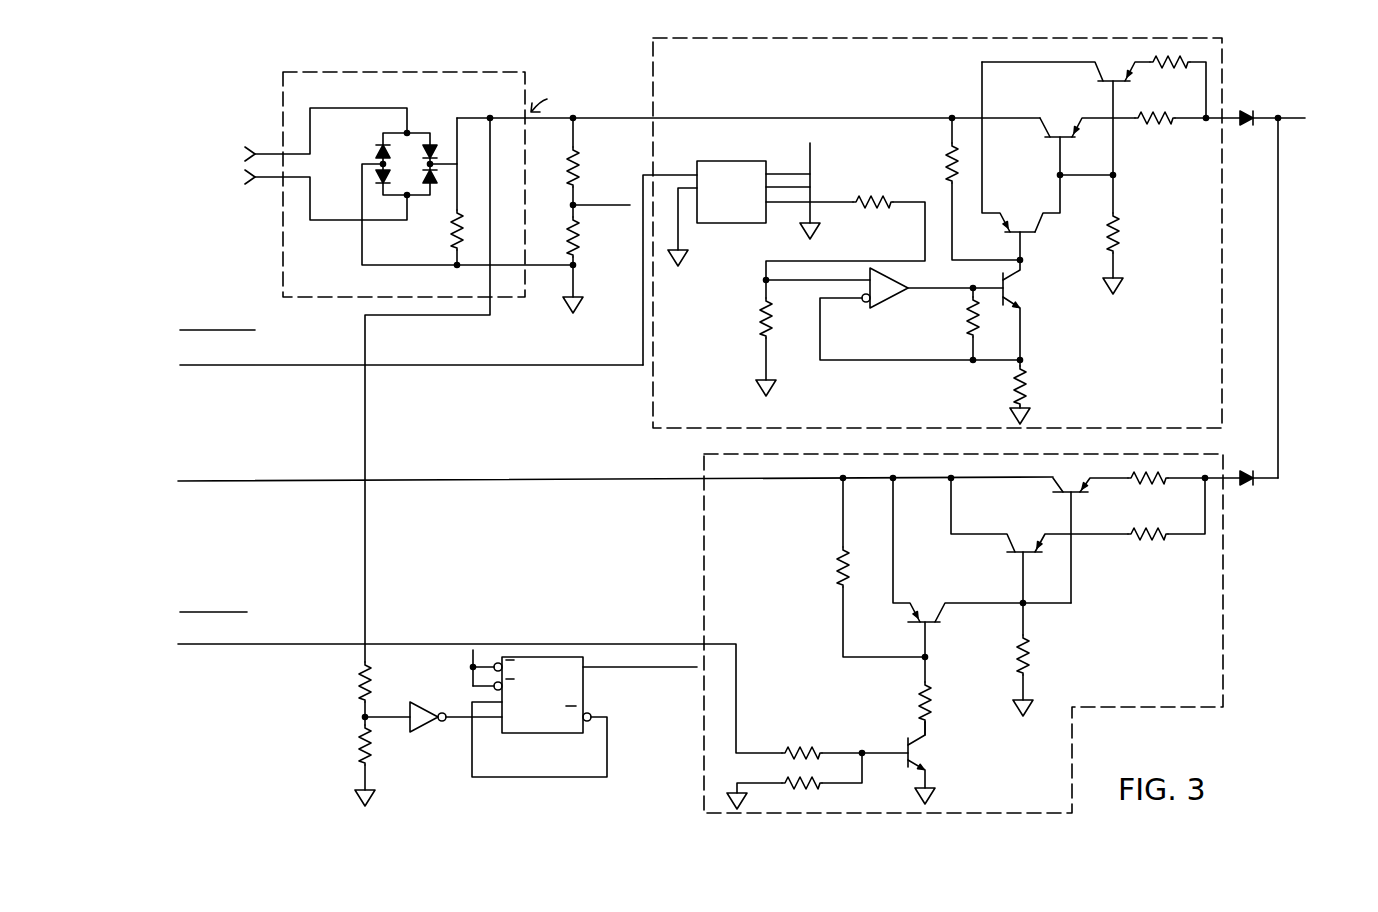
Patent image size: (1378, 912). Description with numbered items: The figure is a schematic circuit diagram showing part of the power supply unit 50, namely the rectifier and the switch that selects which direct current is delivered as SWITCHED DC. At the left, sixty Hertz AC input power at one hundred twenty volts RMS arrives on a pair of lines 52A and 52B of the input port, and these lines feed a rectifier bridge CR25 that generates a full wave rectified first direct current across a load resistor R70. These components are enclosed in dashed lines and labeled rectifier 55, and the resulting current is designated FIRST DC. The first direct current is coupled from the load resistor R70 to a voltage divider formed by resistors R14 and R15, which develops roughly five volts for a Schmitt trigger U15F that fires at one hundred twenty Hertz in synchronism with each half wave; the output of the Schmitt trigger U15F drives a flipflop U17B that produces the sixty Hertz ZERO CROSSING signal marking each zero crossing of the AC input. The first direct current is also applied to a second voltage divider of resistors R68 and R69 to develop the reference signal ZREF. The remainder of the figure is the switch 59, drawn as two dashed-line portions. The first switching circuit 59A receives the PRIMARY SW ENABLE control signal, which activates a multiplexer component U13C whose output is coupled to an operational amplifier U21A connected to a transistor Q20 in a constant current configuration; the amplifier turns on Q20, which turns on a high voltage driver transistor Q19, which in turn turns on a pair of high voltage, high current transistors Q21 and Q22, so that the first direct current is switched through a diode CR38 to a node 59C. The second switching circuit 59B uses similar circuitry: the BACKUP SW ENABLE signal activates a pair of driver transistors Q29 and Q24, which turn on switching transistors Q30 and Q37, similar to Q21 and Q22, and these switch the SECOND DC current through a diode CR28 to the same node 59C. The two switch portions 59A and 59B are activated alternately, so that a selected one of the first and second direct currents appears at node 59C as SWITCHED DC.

The unit 50 is at (1249, 82).
The rectifier 55 is at (372, 72).
The line 52A is at (254, 152).
The line 52B is at (255, 179).
The rectifier bridge CR25 is at (421, 132).
The load resistor R70 is at (437, 239).
The resistor R68 is at (598, 167).
The resistor R69 is at (589, 265).
The switch 59 is at (615, 553).
The switching circuit 59A is at (652, 82).
The second switching circuit 59B is at (703, 522).
The node 59C is at (1277, 121).
The multiplexer component U13C is at (784, 243).
The operational amplifier U21A is at (889, 332).
The high voltage driver transistor Q19 is at (1022, 162).
The transistor Q20 is at (1032, 342).
The high voltage, high current transistor Q21 is at (1094, 115).
The high voltage, high current transistor Q22 is at (1087, 206).
The diode CR38 is at (1267, 107).
The diode CR28 is at (1254, 489).
The driver transistor Q24 is at (982, 606).
The driver transistor Q29 is at (851, 765).
The switching transistor Q30 is at (1146, 537).
The switching transistor Q37 is at (1079, 596).
The resistor R14 is at (343, 693).
The resistor R15 is at (345, 765).
The Schmitt trigger U15F is at (433, 725).
The flipflop U17B is at (562, 711).